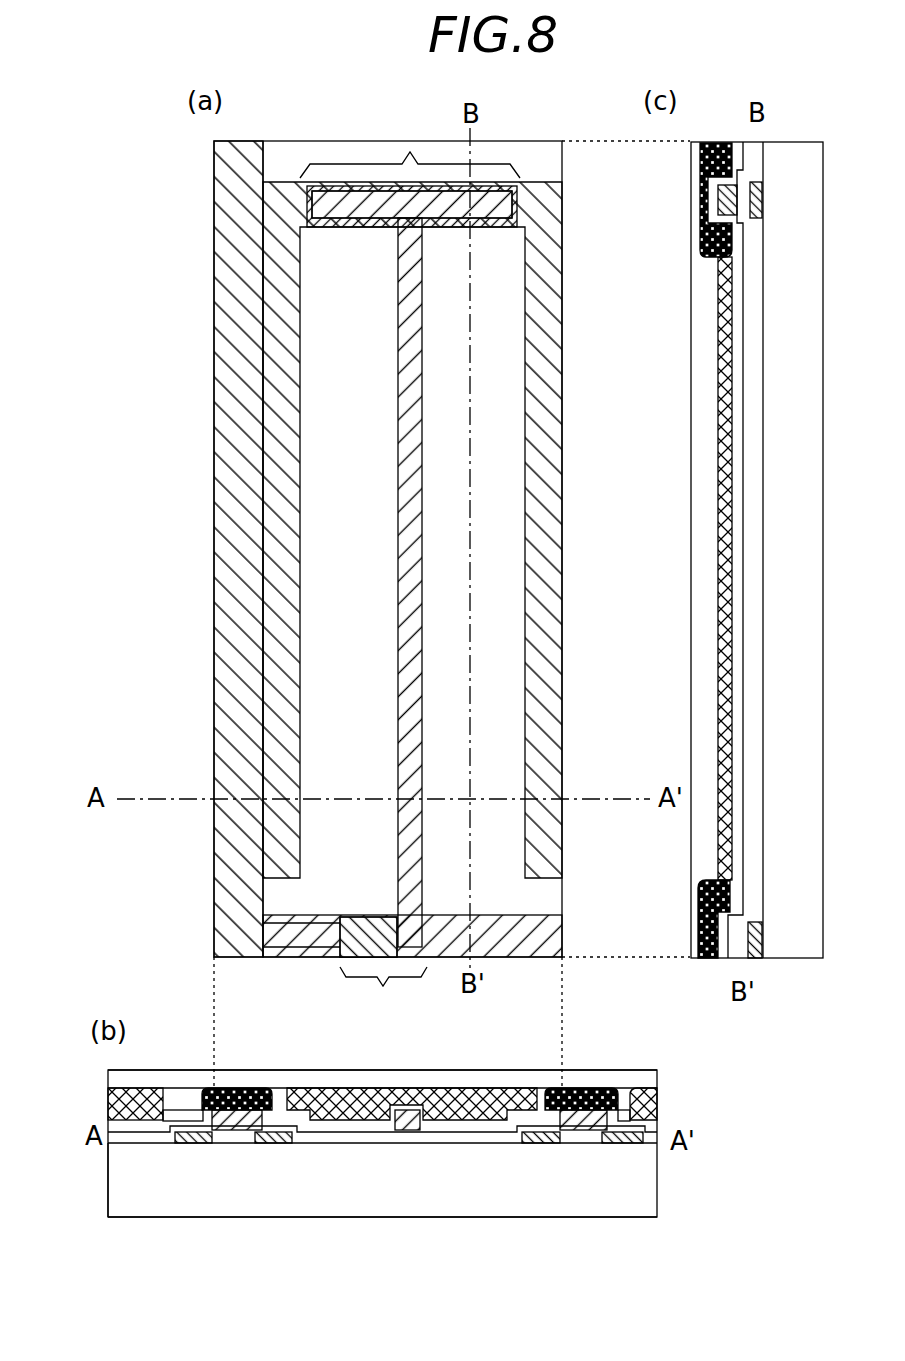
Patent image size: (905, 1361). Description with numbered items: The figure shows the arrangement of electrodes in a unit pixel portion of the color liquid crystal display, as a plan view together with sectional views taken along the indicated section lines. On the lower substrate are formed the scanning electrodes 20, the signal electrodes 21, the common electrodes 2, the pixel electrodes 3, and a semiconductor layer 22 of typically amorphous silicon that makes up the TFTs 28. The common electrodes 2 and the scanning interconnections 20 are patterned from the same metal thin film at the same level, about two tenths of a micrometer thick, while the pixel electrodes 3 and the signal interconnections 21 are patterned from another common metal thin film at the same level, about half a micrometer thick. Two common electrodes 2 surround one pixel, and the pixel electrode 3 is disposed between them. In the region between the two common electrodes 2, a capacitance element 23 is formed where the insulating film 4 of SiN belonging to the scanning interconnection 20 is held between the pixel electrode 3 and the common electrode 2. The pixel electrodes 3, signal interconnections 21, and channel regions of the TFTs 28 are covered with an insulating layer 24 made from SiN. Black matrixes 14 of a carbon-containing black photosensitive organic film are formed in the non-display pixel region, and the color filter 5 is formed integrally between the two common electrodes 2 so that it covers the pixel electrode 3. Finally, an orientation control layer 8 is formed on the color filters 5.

The common electrode 2 is at (562, 553).
The pixel electrode 3 is at (407, 668).
The insulating film 4 is at (345, 1140).
The color filter 5 is at (718, 632).
The orientation control layer 8 is at (633, 1082).
The black matrix 14 is at (700, 165).
The scanning electrode 20 is at (500, 946).
The signal electrode 21 is at (222, 592).
The semiconductor layer 22 is at (380, 935).
The capacitance element 23 is at (410, 170).
The insulating layer 24 is at (108, 1108).
The TFT 28 is at (383, 995).